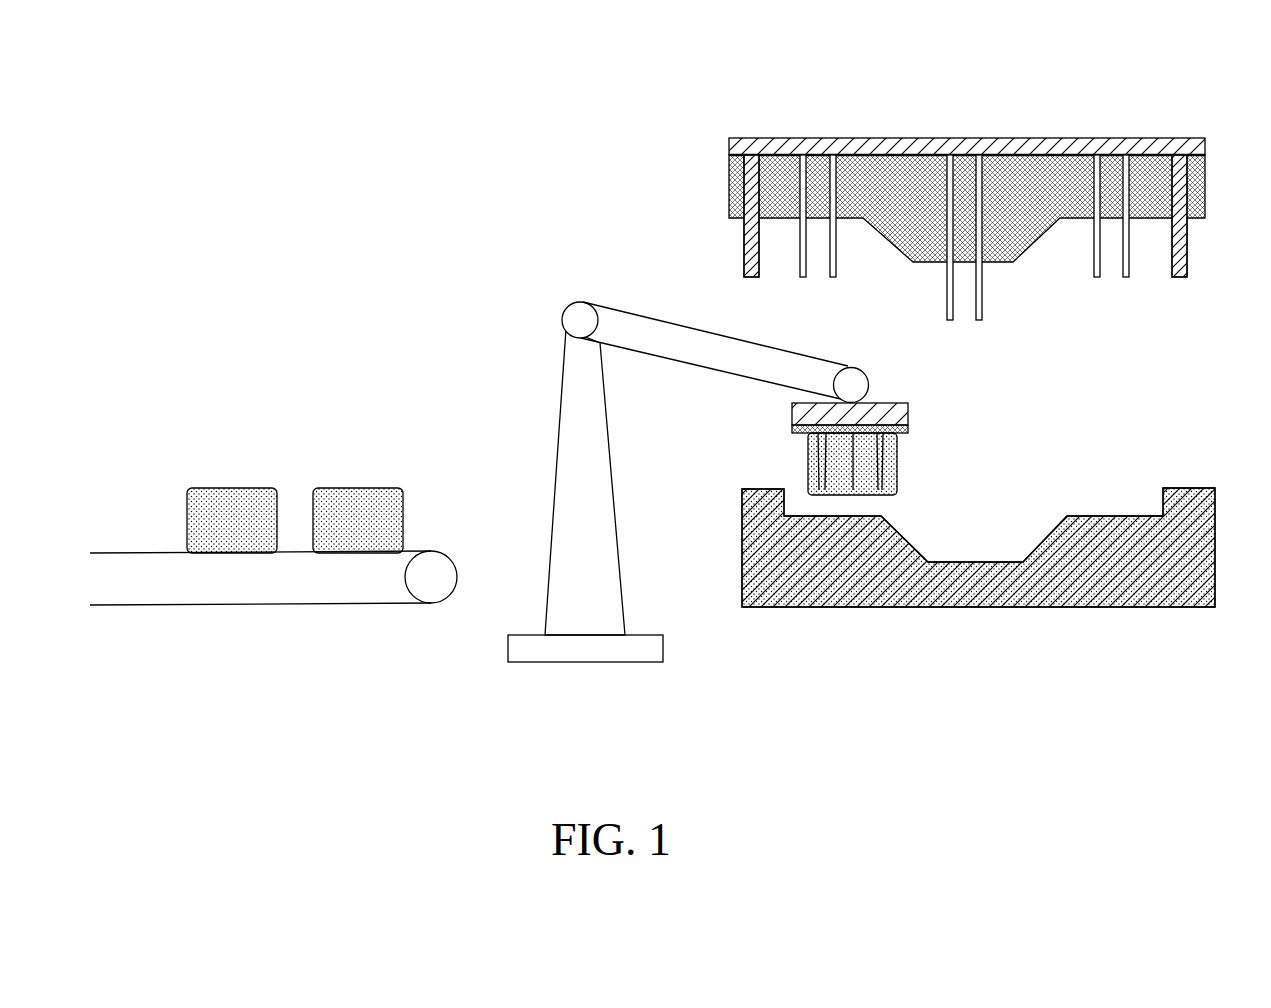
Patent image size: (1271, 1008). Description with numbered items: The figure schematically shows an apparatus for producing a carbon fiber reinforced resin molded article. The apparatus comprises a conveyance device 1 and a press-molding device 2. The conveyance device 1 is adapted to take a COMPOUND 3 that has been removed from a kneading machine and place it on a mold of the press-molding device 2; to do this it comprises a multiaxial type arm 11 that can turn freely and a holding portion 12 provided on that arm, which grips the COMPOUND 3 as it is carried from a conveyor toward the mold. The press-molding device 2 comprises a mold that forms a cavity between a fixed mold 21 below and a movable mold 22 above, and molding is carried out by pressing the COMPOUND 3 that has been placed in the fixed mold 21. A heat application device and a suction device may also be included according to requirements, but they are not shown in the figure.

The conveyance device 1 is at (577, 292).
The multiaxial type arm 11 is at (698, 347).
The holding portion 12 is at (828, 403).
The press-molding device 2 is at (723, 137).
The fixed mold 21 is at (901, 577).
The movable mold 22 is at (912, 195).
The COMPOUND 3 is at (354, 498).